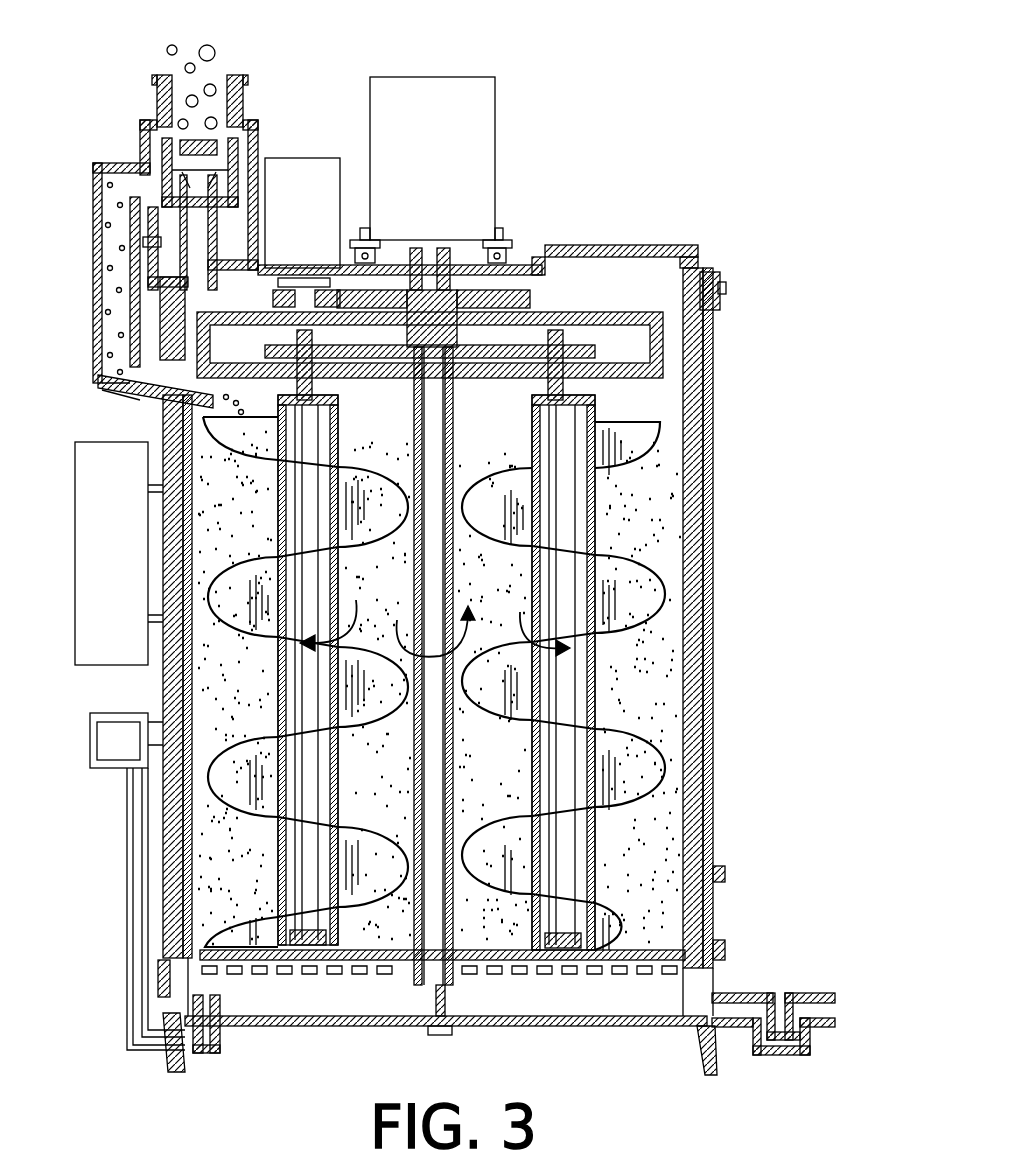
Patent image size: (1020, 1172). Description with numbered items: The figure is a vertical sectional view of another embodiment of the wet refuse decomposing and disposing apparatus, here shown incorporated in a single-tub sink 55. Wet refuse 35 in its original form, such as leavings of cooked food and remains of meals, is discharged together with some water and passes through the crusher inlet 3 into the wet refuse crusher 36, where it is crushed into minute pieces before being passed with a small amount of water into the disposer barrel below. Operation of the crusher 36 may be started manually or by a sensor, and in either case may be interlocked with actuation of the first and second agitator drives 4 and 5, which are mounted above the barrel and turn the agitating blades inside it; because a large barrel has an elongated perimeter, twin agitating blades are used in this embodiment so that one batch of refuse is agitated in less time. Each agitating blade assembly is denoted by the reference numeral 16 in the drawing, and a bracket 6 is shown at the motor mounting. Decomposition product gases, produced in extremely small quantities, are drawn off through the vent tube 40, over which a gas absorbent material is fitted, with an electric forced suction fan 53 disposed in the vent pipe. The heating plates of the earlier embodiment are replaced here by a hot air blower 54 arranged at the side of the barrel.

The crusher inlet 3 is at (242, 108).
The first agitator drive 4 is at (445, 80).
The second agitator drive 5 is at (304, 158).
The motor mount 6 is at (500, 240).
The auger screw 16 is at (338, 422).
The wet refuse 35 is at (165, 48).
The wet refuse crusher 36 is at (148, 120).
The vent tube 40 is at (200, 262).
The electric forced suction fan 53 is at (232, 178).
The hot air blower 54 is at (100, 752).
The single-tub sink 55 is at (170, 178).